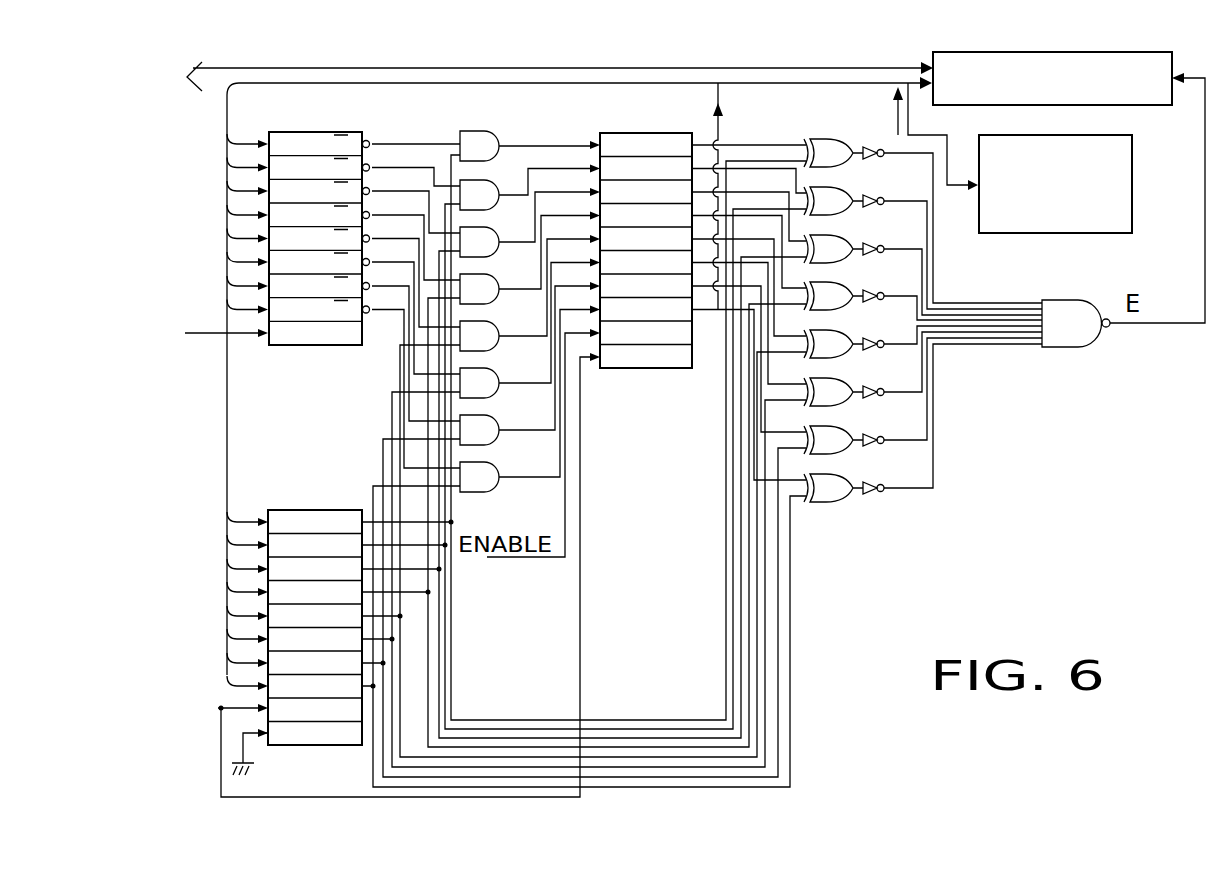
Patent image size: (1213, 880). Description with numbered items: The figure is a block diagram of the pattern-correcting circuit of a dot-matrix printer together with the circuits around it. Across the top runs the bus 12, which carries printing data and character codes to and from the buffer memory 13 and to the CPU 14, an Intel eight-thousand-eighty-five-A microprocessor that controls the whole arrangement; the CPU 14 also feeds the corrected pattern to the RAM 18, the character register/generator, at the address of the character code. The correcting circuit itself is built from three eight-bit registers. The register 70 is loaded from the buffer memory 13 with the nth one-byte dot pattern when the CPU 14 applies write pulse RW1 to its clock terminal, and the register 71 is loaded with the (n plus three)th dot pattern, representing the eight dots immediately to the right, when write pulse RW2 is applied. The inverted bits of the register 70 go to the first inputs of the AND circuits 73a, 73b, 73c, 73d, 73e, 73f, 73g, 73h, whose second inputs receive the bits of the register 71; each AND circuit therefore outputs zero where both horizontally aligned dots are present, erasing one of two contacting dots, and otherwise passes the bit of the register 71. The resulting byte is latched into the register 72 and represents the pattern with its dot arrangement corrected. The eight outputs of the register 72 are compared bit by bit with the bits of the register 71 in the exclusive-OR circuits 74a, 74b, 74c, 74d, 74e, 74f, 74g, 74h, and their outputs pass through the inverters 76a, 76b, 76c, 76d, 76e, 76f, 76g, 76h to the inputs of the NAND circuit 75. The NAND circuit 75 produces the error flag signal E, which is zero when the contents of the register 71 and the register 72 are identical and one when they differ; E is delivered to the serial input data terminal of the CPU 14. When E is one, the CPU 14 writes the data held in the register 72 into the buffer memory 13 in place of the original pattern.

The bus 12 is at (571, 81).
The buffer memory 13 is at (110, 395).
The CPU 14 is at (1160, 106).
The RAM 18 is at (1051, 234).
The register 70 is at (314, 346).
The register 71 is at (314, 508).
The register 72 is at (645, 369).
The AND circuit 73a is at (463, 133).
The AND circuit 73b is at (496, 156).
The AND circuit 73c is at (483, 238).
The AND circuit 73d is at (483, 285).
The AND circuit 73e is at (483, 332).
The AND circuit 73f is at (483, 379).
The AND circuit 73g is at (483, 426).
The AND circuit 73h is at (483, 473).
The exclusive-OR circuit 74a is at (818, 142).
The exclusive-OR circuit 74b is at (838, 197).
The exclusive-OR circuit 74c is at (838, 245).
The exclusive-OR circuit 74d is at (838, 292).
The exclusive-OR circuit 74e is at (838, 340).
The exclusive-OR circuit 74f is at (838, 388).
The exclusive-OR circuit 74g is at (838, 436).
The exclusive-OR circuit 74h is at (838, 484).
The NAND circuit 75 is at (1071, 348).
The inverter 76a is at (877, 145).
The inverter 76b is at (884, 203).
The inverter 76c is at (884, 251).
The inverter 76d is at (884, 297).
The inverter 76e is at (884, 346).
The inverter 76f is at (884, 394).
The inverter 76g is at (884, 442).
The inverter 76h is at (882, 491).